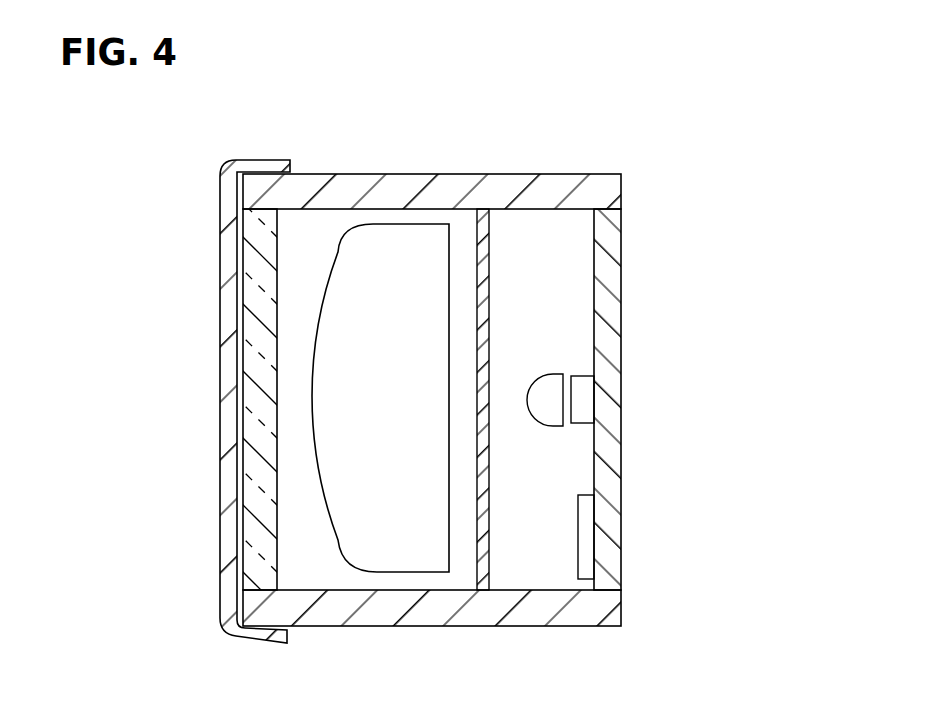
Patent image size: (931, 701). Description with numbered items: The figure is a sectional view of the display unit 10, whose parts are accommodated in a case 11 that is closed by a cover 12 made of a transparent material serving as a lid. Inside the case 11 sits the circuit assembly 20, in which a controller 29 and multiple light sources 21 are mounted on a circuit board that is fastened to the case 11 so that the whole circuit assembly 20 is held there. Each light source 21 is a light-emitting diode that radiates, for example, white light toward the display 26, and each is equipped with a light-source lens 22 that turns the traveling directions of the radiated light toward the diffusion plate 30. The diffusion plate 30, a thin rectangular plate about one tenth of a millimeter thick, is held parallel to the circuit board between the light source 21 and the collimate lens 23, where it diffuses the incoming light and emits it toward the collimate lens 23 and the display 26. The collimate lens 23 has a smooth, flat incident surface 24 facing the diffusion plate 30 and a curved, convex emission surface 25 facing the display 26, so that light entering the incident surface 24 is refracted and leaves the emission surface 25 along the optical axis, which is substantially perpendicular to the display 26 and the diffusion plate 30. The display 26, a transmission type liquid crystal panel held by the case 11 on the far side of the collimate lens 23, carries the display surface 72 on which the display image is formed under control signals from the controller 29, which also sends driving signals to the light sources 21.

The display unit 10 is at (628, 164).
The case 11 is at (313, 174).
The cover 12 is at (263, 160).
The circuit assembly 20 is at (622, 274).
The light source 21 is at (583, 393).
The light-source lens 22 is at (570, 440).
The collimate lens 23 is at (395, 224).
The incident surface 24 is at (451, 238).
The emission surface 25 is at (338, 257).
The display 26 is at (220, 235).
The controller 29 is at (587, 513).
The diffusion plate 30 is at (489, 247).
The display surface 72 is at (243, 553).